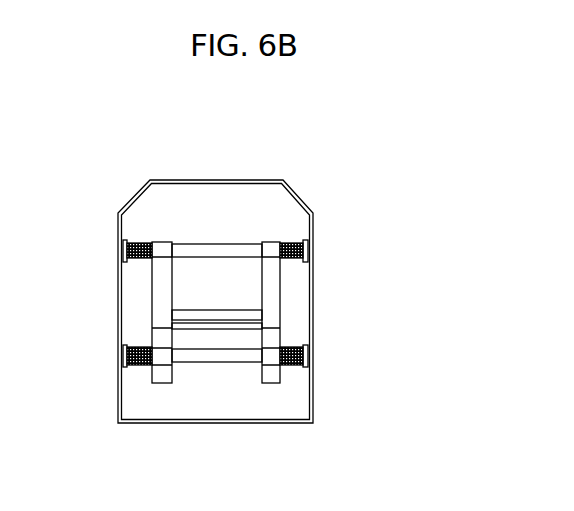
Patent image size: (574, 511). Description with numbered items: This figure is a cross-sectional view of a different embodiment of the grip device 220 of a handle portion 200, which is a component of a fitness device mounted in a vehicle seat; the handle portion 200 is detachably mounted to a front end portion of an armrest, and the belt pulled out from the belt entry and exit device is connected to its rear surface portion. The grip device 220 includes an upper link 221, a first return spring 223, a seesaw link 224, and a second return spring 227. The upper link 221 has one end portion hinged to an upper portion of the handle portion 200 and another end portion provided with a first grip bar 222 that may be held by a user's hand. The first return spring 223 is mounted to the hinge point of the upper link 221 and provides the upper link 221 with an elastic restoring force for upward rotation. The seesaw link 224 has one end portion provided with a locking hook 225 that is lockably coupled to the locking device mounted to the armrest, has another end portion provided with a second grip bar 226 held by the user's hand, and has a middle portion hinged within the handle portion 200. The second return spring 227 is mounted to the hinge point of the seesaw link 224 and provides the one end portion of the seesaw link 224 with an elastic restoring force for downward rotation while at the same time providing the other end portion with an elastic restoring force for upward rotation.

The handle portion 200 is at (247, 180).
The grip device 220 is at (227, 212).
The upper link 221 is at (187, 248).
The first grip bar 222 is at (235, 313).
The first return spring 223 is at (290, 243).
The seesaw link 224 is at (208, 357).
The locking hook 225 is at (270, 373).
The second grip bar 226 is at (248, 327).
The second return spring 227 is at (297, 365).